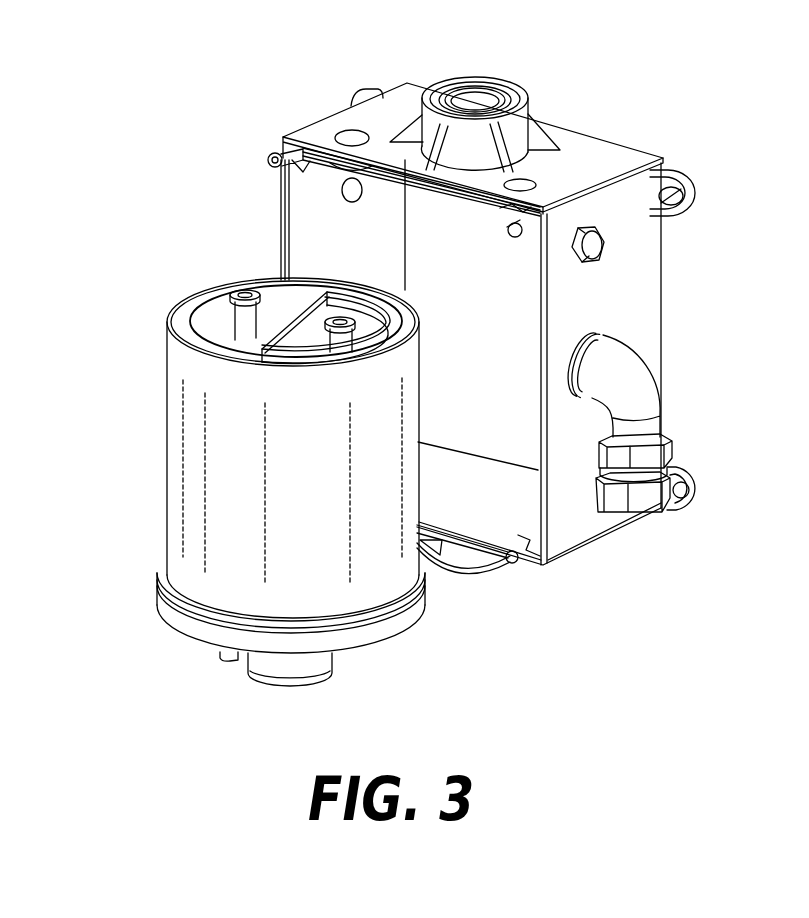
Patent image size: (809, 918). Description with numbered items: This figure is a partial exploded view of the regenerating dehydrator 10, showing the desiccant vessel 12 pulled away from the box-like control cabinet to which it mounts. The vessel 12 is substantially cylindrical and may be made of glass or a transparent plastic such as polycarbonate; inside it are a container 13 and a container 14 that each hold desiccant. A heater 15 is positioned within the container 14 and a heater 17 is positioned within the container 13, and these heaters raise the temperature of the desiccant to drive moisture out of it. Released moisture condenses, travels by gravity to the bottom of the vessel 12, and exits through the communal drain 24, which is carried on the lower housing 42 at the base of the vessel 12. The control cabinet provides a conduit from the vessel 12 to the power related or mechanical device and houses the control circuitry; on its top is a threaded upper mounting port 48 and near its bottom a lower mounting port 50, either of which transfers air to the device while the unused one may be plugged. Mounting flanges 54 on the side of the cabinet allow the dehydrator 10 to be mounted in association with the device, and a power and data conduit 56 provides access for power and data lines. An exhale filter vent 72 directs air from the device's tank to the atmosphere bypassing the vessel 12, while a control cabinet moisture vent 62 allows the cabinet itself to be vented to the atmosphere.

The dehydrator 10 is at (247, 120).
The vessel 12 is at (173, 489).
The container 13 is at (296, 323).
The container 14 is at (193, 300).
The heater 15 is at (238, 289).
The heater 17 is at (348, 338).
The communal drain 24 is at (277, 674).
The lower housing 42 is at (377, 640).
The upper mounting port 48 is at (517, 128).
The lower mounting port 50 is at (472, 564).
The mounting flanges 54 is at (697, 193).
The power and data conduit 56 is at (648, 412).
The control cabinet moisture vent 62 is at (344, 188).
The exhale filter vent 72 is at (600, 252).